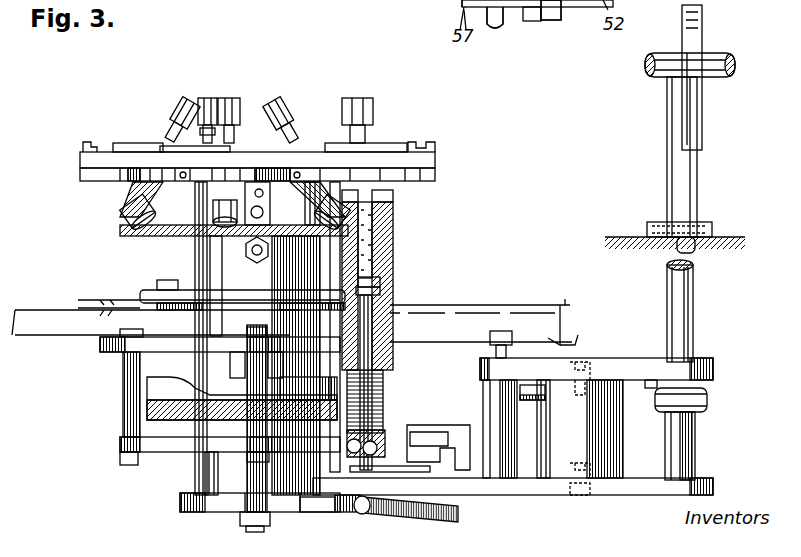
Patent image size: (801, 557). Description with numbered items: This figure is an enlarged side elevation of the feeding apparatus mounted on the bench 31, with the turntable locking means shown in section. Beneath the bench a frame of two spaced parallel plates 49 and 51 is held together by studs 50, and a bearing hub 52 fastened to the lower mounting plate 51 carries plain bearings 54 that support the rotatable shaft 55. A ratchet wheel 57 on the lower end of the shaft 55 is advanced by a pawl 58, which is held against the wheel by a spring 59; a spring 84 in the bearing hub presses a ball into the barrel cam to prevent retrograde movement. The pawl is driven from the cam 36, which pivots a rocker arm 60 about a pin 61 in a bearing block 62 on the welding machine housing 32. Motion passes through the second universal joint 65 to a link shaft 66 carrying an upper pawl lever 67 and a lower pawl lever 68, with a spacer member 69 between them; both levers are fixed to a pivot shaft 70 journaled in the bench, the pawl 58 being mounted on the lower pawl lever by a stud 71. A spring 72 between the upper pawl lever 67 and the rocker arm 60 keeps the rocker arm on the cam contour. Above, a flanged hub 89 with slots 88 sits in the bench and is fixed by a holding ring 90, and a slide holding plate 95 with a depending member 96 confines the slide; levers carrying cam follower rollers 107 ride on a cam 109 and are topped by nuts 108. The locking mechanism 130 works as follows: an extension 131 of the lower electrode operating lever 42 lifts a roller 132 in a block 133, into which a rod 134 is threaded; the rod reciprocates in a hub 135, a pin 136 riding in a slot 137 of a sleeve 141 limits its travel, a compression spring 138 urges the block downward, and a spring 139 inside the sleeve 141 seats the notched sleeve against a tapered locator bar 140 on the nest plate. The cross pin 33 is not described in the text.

The bench 31 is at (25, 318).
The welding machine housing 32 is at (720, 248).
The cross pin 33 is at (722, 79).
The cam 36 is at (703, 33).
The lower electrode operating lever 42 is at (460, 425).
The plate 49 is at (100, 342).
The studs 50 is at (148, 385).
The lower mounting plate 51 is at (120, 445).
The bearing hub 52 is at (215, 470).
The plain bearings 54 is at (497, 30).
The rotatable shaft 55 is at (553, 20).
The ratchet wheel 57 is at (185, 500).
The pawl 58 is at (330, 506).
The spring 59 is at (385, 516).
The rocker arm 60 is at (694, 164).
The pin 61 is at (697, 219).
The bearing block 62 is at (648, 226).
The second universal joint 65 is at (707, 398).
The link shaft 66 is at (695, 425).
The upper pawl lever 67 is at (713, 373).
The lower pawl lever 68 is at (713, 482).
The spacer member 69 is at (590, 405).
The pivot shaft 70 is at (507, 443).
The stud 71 is at (355, 513).
The spring 72 is at (643, 389).
The spring 84 is at (462, 5).
The slots 88 is at (257, 253).
The hub 89 is at (217, 272).
The holding ring 90 is at (153, 292).
The slide holding plate 95 is at (135, 184).
The depending member 96 is at (243, 204).
The cam follower roller 107 is at (125, 216).
The nut 108 is at (178, 104).
The cam 109 is at (150, 236).
The mechanism 130 is at (410, 265).
The extension 131 is at (393, 468).
The roller 132 is at (356, 458).
The block 133 is at (378, 432).
The rod 134 is at (365, 325).
The hub 135 is at (388, 224).
The pin 136 is at (380, 285).
The slot 137 is at (370, 295).
The compression spring 138 is at (386, 374).
The spring 139 is at (378, 250).
The locator bar 140 is at (80, 170).
The sleeve 141 is at (393, 213).